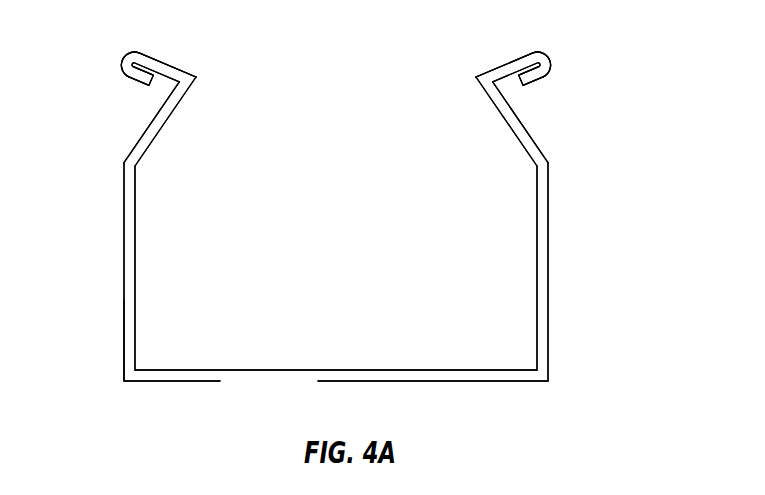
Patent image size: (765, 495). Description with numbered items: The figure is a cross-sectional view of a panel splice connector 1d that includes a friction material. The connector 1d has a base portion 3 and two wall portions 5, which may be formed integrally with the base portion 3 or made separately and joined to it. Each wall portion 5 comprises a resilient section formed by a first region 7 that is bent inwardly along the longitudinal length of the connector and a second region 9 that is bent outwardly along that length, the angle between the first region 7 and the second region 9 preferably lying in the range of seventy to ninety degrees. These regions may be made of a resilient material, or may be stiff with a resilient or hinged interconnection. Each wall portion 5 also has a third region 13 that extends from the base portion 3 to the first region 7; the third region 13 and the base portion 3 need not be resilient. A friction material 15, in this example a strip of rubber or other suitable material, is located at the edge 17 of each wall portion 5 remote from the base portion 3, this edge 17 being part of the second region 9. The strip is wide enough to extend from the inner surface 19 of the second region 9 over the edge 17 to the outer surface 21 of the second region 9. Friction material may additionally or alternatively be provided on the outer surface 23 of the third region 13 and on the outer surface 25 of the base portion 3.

The connector 1d is at (582, 180).
The base portion 3 is at (358, 381).
The wall portion 5 is at (123, 295).
The first region 7 is at (155, 118).
The second region 9 is at (160, 65).
The third region 13 is at (128, 230).
The friction material 15 is at (117, 46).
The edge 17 is at (118, 60).
The inner surface 19 is at (184, 70).
The outer surface 21 is at (162, 80).
The outer surface 23 is at (123, 333).
The outer surface 25 is at (468, 381).